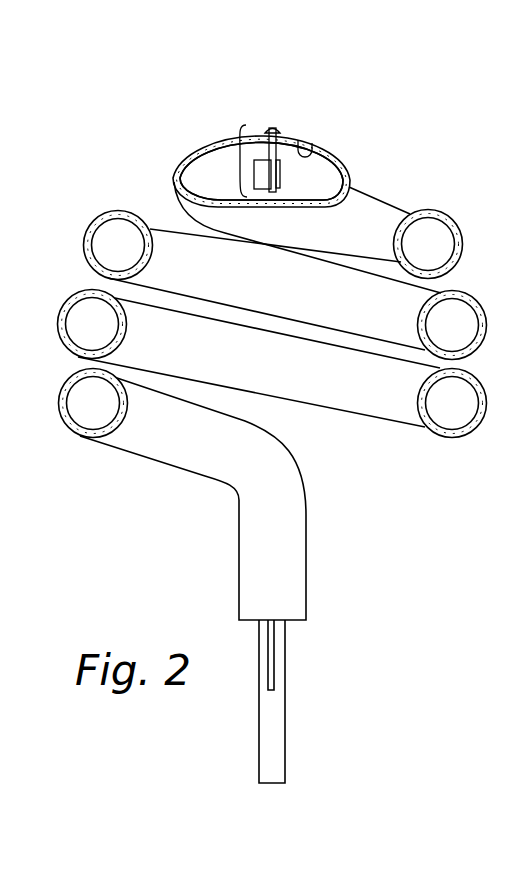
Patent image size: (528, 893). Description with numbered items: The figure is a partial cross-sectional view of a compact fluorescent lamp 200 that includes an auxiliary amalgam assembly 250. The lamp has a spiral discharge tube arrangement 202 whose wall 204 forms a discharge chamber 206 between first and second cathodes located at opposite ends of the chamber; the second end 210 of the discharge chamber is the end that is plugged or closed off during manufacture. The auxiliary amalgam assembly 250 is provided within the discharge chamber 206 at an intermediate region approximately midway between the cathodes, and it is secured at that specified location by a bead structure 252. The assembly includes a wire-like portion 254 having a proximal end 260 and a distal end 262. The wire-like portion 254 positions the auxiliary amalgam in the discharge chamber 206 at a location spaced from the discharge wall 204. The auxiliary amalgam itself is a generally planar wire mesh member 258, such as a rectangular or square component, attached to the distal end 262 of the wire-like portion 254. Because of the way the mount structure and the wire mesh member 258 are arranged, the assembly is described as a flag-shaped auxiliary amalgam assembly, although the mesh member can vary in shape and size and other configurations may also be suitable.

The compact fluorescent lamp 200 is at (158, 96).
The spiral discharge tube arrangement 202 is at (192, 186).
The wall 204 is at (312, 153).
The discharge chamber 206 is at (318, 177).
The second end 210 is at (272, 562).
The auxiliary amalgam assembly 250 is at (240, 165).
The bead structure 252 is at (278, 132).
The wire-like portion 254 is at (313, 158).
The generally planar wire mesh member 258 is at (262, 180).
The proximal end 260 is at (262, 148).
The distal end 262 is at (284, 192).